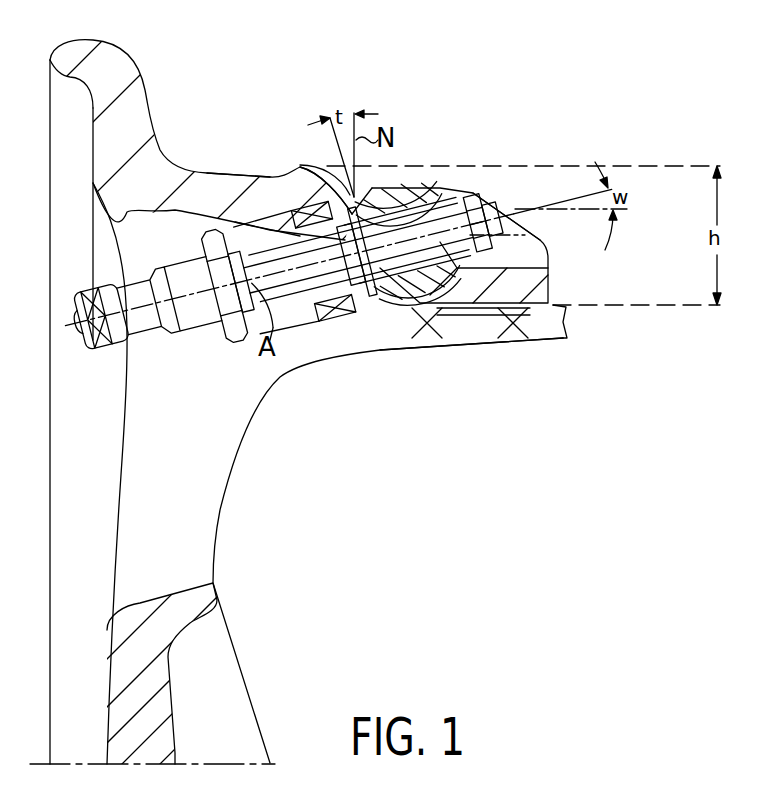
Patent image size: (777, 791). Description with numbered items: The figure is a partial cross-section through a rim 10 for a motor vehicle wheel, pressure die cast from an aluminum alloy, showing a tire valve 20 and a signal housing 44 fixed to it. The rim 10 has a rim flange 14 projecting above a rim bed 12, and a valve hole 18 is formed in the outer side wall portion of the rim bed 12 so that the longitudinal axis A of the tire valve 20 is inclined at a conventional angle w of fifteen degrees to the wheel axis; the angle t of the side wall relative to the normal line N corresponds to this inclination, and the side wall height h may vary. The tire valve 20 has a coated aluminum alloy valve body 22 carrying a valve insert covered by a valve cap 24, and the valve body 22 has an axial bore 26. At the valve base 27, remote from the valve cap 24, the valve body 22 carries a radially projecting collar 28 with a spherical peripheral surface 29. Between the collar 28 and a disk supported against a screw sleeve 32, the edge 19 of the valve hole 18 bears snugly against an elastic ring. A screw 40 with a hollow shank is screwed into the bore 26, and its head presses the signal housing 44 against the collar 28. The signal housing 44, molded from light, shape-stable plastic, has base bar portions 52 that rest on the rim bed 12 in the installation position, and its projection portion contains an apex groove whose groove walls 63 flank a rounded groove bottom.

The rim 10 is at (275, 465).
The rim bed 12 is at (563, 340).
The rim flange 14 is at (122, 72).
The valve hole 18 is at (256, 184).
The edge of the valve hole 19 is at (330, 183).
The tire valve 20 is at (202, 335).
The valve body 22 is at (320, 333).
The valve cap 24 is at (115, 338).
The axial bore 26 is at (346, 300).
The valve base 27 is at (383, 310).
The collar 28 is at (413, 300).
The spherical peripheral surface 29 is at (430, 193).
The screw sleeve 32 is at (267, 271).
The screw 40 is at (480, 197).
The signal housing 44 is at (565, 282).
The base bar portions 52 is at (503, 309).
The groove walls 63 is at (527, 253).